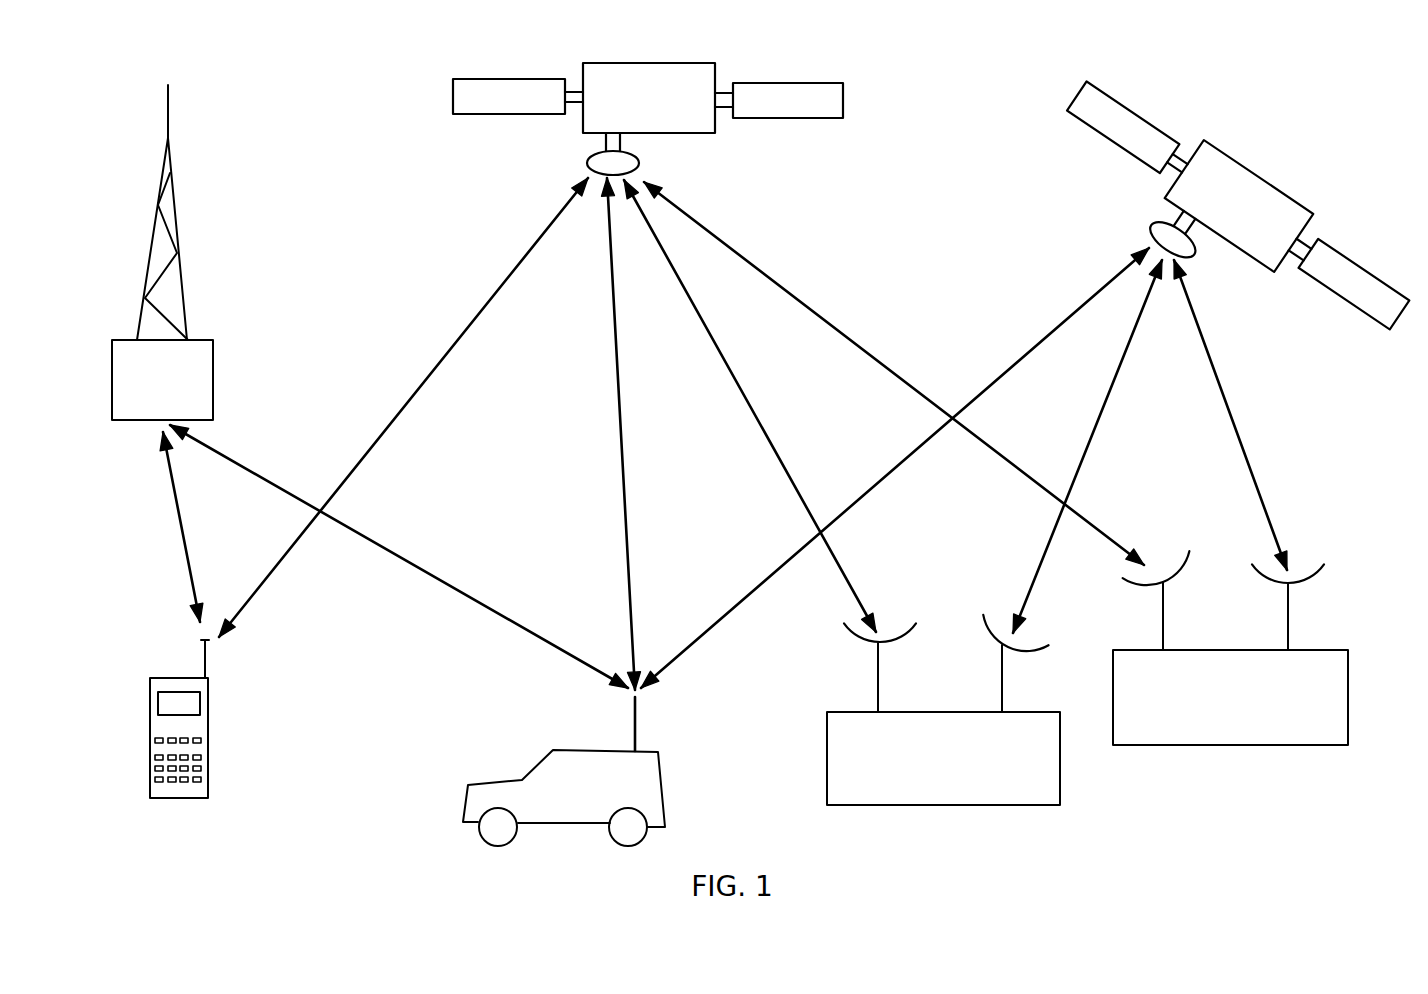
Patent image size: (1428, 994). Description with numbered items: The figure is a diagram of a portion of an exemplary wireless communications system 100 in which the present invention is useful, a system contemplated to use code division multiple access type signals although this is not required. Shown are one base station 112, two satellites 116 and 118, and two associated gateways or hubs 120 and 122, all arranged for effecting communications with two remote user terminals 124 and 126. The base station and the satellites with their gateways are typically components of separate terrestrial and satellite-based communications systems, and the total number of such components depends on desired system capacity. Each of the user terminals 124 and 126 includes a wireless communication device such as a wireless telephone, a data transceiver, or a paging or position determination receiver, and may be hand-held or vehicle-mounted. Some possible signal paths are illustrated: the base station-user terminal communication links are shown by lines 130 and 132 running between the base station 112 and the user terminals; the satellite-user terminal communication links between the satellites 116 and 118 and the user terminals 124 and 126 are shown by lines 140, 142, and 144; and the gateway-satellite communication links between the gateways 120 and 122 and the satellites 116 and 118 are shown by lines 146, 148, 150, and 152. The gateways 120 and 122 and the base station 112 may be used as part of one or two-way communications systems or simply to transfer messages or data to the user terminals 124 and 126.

The communications system 100 is at (258, 113).
The base station 112 is at (205, 340).
The satellite 116 is at (823, 83).
The satellite 118 is at (1338, 250).
The gateway 120 is at (1038, 807).
The gateway 122 is at (1312, 747).
The user terminal 124 is at (180, 800).
The user terminal 126 is at (652, 750).
The base station-user terminal communication link 130 is at (175, 497).
The base station-user terminal communication link 132 is at (215, 450).
The satellite-user terminal communication link 140 is at (449, 348).
The satellite-user terminal communication link 142 is at (620, 408).
The satellite-user terminal communication link 144 is at (757, 587).
The gateway-satellite communication link 146 is at (761, 420).
The gateway-satellite communication link 148 is at (843, 333).
The gateway-satellite communication link 150 is at (1097, 422).
The gateway-satellite communication link 152 is at (1230, 413).